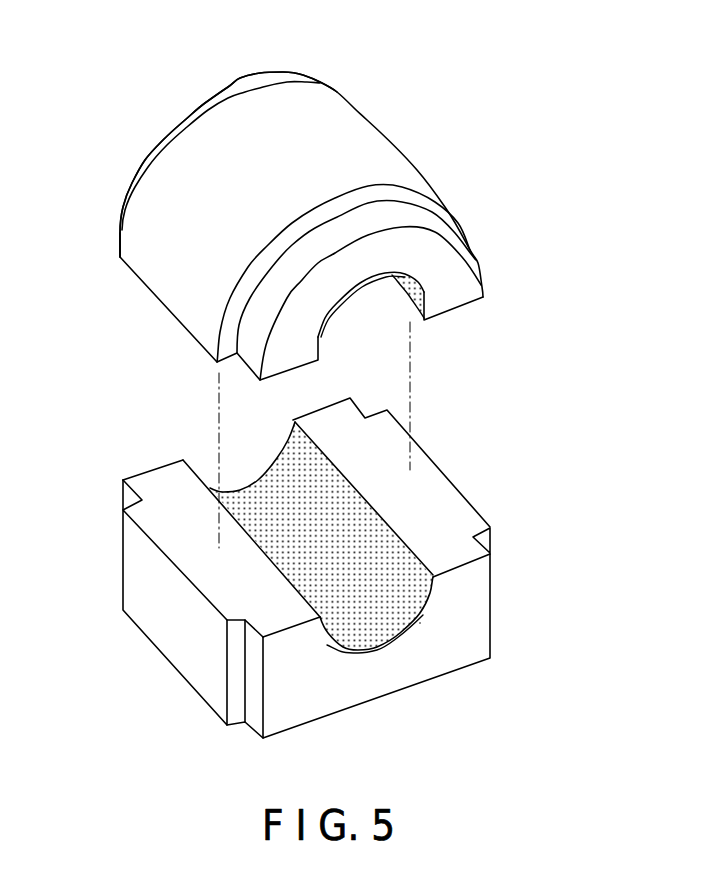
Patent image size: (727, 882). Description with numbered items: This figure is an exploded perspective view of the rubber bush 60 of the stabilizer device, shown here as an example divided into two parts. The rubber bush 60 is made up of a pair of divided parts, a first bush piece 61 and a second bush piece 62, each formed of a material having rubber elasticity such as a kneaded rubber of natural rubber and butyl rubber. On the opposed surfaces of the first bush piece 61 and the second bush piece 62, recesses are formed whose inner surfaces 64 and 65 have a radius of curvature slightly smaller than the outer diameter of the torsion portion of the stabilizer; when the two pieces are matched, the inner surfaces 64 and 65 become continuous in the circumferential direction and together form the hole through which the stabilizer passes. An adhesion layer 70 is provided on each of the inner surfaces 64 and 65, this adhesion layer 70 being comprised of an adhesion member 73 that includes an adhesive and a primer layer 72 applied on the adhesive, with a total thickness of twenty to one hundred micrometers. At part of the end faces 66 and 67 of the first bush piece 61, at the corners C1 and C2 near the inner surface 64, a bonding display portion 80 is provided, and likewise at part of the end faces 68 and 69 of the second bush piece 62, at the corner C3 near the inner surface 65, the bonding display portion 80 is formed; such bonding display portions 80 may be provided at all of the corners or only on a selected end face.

The rubber bush 60 is at (458, 153).
The first bush piece 61 is at (177, 638).
The second bush piece 62 is at (170, 170).
The inner surface 64 is at (285, 473).
The inner surface 65 is at (352, 300).
The end face 66 is at (343, 687).
The end face 67 is at (163, 466).
The end face 68 is at (452, 295).
The end face 69 is at (228, 86).
The adhesion layer 70 is at (380, 543).
The primer layer 72 is at (293, 552).
The adhesion member 73 is at (437, 525).
The bonding display portion 80 is at (400, 277).
The corner C1 is at (420, 623).
The corner C2 is at (250, 472).
The corner C3 is at (372, 287).